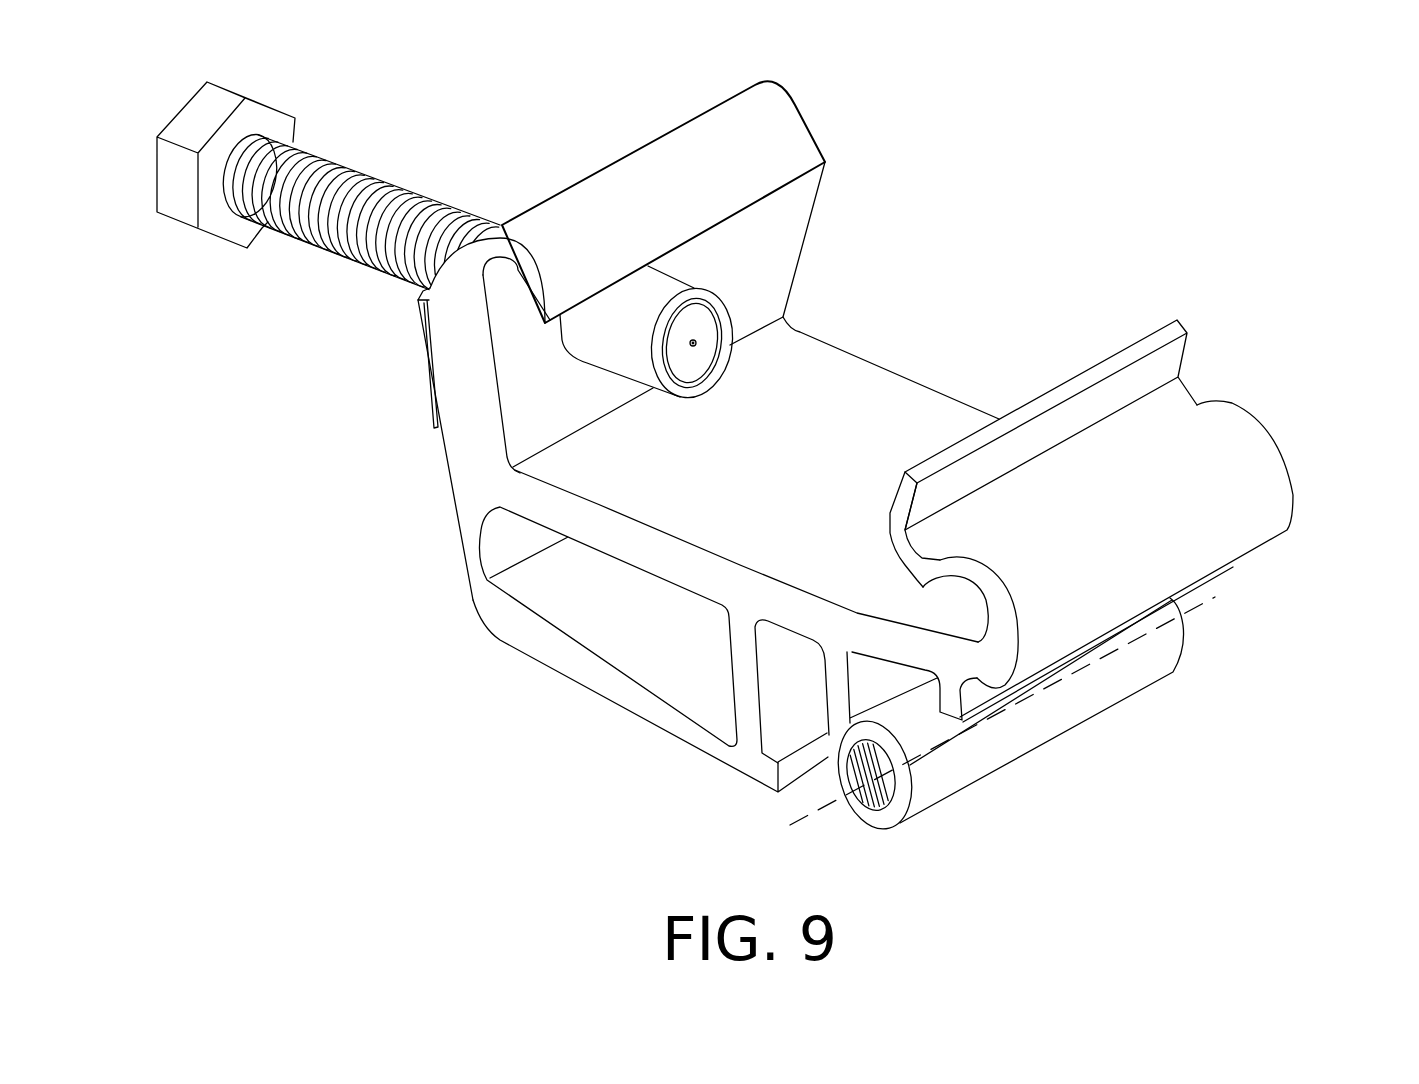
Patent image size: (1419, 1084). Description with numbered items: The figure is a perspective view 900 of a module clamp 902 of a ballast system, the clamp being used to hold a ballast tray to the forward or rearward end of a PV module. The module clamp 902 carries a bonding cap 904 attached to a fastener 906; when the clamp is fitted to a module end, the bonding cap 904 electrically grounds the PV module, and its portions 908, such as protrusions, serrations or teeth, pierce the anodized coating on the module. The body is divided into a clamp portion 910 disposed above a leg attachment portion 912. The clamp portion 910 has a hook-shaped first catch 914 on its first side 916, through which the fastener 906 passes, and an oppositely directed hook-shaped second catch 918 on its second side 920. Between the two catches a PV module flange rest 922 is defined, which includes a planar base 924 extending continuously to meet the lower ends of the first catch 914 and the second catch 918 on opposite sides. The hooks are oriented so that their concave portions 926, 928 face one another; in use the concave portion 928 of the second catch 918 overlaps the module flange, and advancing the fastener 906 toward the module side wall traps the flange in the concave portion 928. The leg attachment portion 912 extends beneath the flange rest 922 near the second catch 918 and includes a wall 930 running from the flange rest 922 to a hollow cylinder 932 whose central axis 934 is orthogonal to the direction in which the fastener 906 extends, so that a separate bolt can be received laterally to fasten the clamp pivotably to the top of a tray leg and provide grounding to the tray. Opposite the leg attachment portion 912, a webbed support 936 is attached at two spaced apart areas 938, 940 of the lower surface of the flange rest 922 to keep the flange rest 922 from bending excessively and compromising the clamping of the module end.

The perspective view 900 is at (768, 465).
The module clamp 902 is at (328, 180).
The bonding cap 904 is at (684, 363).
The fastener 906 is at (357, 262).
The portions 908 is at (700, 348).
The clamp portion 910 is at (854, 451).
The leg attachment portion 912 is at (1059, 711).
The first catch 914 is at (648, 146).
The first side 916 is at (765, 235).
The second catch 918 is at (962, 540).
The second side 920 is at (1258, 548).
The PV module flange rest 922 is at (873, 390).
The planar base 924 is at (756, 479).
The concave portion 926 is at (575, 515).
The concave portion 928 is at (958, 607).
The wall 930 is at (837, 693).
The hollow cylinder 932 is at (1032, 733).
The central axis 934 is at (1205, 606).
The webbed support 936 is at (470, 625).
The spaced apart area 938 is at (483, 480).
The spaced apart area 940 is at (740, 597).